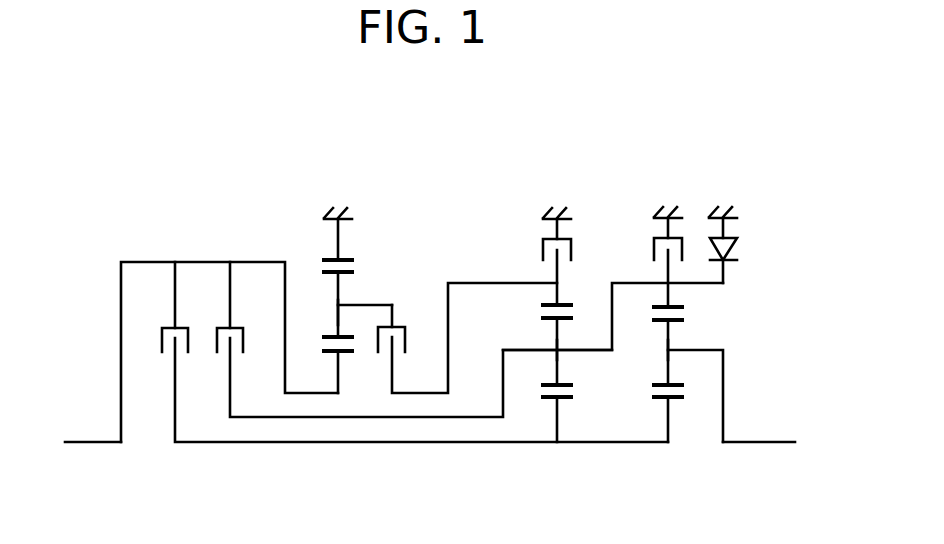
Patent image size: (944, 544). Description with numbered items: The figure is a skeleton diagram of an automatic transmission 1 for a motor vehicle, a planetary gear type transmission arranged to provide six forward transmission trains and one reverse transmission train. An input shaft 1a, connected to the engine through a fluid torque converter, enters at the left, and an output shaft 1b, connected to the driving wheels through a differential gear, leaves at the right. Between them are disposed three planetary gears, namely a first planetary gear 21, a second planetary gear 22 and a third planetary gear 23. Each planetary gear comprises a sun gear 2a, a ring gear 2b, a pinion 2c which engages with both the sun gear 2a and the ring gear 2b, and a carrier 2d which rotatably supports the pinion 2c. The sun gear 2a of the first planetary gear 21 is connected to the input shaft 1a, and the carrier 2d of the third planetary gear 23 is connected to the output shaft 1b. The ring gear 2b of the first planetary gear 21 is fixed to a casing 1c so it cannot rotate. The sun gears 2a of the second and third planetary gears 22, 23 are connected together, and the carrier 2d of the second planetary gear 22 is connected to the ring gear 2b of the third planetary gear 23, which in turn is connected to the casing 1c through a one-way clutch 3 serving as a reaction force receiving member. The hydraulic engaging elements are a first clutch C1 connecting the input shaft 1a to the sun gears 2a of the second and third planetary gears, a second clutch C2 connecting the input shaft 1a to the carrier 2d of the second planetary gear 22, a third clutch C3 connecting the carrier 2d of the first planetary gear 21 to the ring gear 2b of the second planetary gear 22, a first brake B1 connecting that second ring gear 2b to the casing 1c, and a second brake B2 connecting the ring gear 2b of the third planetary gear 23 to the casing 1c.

The automatic transmission 1 is at (235, 190).
The input shaft 1a is at (87, 445).
The output shaft 1b is at (775, 445).
The casing 1c is at (342, 210).
The first planetary gear 21 is at (348, 250).
The second planetary gear 22 is at (535, 272).
The third planetary gear 23 is at (712, 325).
The sun gear 2a is at (345, 355).
The ring gear 2b is at (333, 258).
The pinion 2c is at (338, 320).
The carrier 2d is at (368, 303).
The first clutch C1 is at (162, 340).
The second clutch C2 is at (217, 340).
The third clutch C3 is at (403, 328).
The first brake B1 is at (542, 240).
The second brake B2 is at (655, 250).
The one-way clutch 3 is at (735, 247).